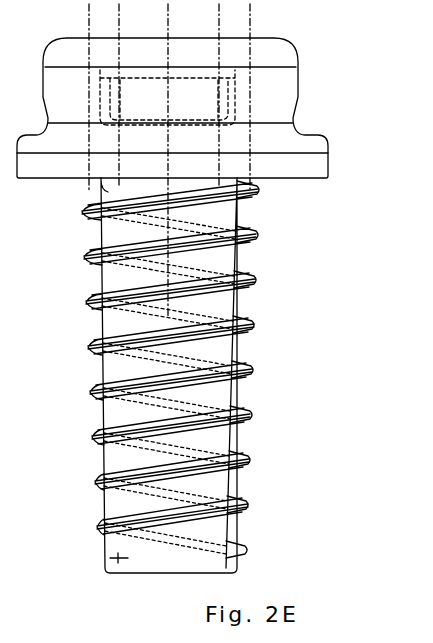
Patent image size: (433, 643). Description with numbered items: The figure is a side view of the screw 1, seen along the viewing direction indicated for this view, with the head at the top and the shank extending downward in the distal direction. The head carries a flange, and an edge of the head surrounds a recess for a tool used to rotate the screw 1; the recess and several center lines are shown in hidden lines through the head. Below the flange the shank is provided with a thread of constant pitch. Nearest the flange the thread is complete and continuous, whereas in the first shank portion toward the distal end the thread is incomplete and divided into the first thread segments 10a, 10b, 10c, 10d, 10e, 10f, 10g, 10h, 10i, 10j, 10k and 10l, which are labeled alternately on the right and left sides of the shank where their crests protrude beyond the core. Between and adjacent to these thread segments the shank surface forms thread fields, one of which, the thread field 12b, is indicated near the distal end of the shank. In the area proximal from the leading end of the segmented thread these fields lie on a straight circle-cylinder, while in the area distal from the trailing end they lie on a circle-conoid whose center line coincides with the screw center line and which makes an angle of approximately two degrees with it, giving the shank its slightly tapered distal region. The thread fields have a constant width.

The screw 1 is at (317, 73).
The first thread segment 10a is at (250, 550).
The first thread segment 10b is at (100, 528).
The first thread segment 10c is at (252, 504).
The first thread segment 10d is at (99, 485).
The first thread segment 10e is at (254, 460).
The first thread segment 10f is at (94, 440).
The first thread segment 10g is at (256, 415).
The first thread segment 10h is at (92, 394).
The first thread segment 10i is at (258, 369).
The first thread segment 10j is at (90, 352).
The first thread segment 10k is at (259, 325).
The first thread segment 10l is at (88, 308).
The thread field 12b is at (126, 560).